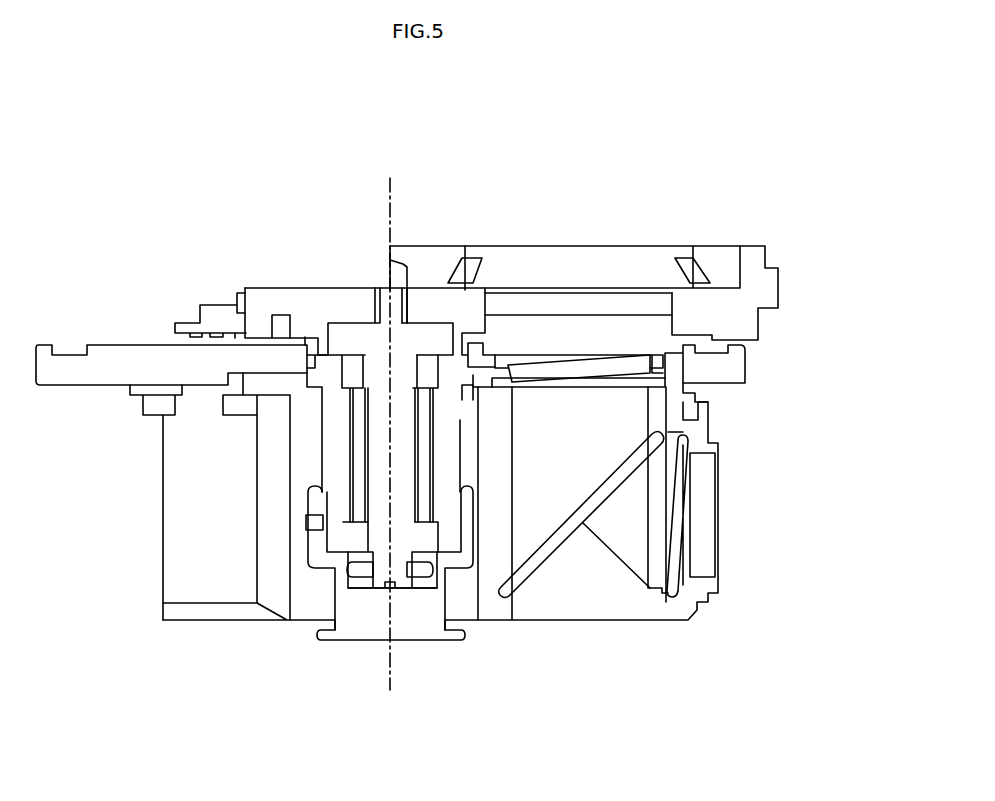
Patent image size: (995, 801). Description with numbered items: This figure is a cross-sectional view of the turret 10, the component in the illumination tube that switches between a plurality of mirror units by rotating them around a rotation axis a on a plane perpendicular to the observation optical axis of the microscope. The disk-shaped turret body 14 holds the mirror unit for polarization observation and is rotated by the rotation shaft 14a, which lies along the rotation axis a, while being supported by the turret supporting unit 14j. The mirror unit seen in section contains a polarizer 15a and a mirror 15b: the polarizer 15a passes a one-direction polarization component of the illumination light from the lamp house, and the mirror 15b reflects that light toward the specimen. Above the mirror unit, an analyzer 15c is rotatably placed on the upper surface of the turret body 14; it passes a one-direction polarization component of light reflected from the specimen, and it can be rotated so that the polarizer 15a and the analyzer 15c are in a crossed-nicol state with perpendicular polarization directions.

The turret 10 is at (497, 156).
The rotation axis a is at (387, 205).
The turret body 14 is at (108, 365).
The rotation shaft 14a is at (442, 603).
The turret supporting unit 14j is at (350, 320).
The polarizer 15a is at (677, 510).
The mirror 15b is at (557, 540).
The analyzer 15c is at (585, 367).